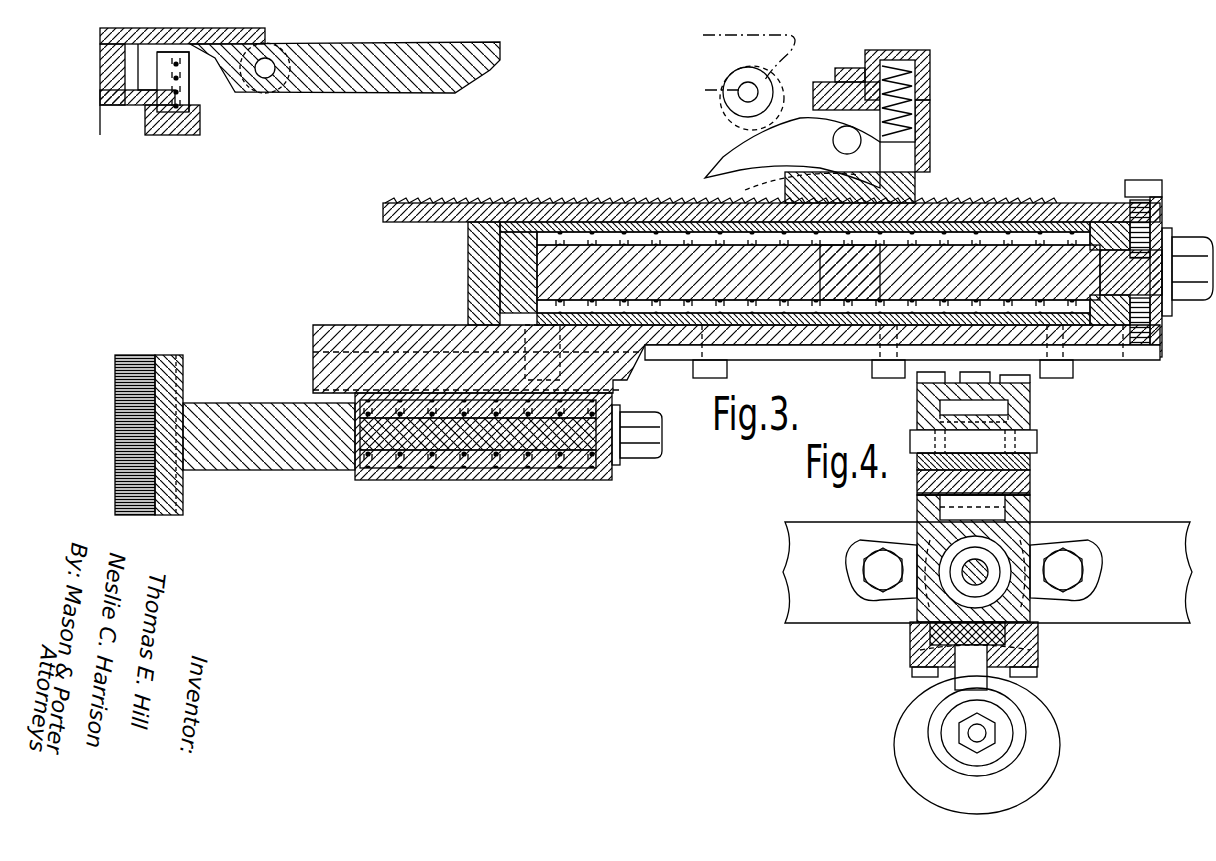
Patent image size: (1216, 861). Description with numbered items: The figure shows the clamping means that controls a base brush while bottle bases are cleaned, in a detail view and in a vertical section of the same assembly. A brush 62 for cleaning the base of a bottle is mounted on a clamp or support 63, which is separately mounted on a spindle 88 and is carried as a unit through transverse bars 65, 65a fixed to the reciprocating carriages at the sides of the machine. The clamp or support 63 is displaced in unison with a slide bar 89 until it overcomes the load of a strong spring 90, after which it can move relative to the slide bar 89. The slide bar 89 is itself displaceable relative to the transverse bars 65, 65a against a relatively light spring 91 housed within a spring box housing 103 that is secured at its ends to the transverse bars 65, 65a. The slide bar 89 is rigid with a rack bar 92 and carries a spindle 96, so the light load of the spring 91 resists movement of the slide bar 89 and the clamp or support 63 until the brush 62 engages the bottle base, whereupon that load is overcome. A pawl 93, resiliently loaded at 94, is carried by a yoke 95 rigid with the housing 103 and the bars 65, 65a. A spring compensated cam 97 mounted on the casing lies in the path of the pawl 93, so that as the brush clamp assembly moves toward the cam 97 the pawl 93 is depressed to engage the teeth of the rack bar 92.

In FIG. 3, the base brush 62 is at (125, 444).
In FIG. 3, the clamp or support 63 is at (183, 500).
In FIG. 4, the clamp or support 63 is at (1032, 758).
In FIG. 3, the transverse bar 65 is at (1102, 228).
In FIG. 3, the transverse bar 65a is at (488, 240).
In FIG. 3, the spindle 88 is at (272, 455).
In FIG. 4, the spindle 88 is at (997, 730).
In FIG. 3, the slide bar 89 is at (340, 364).
In FIG. 4, the slide bar 89 is at (945, 639).
In FIG. 3, the strong spring 90 is at (508, 465).
In FIG. 3, the light spring 91 is at (963, 248).
In FIG. 3, the rack bar 92 is at (588, 214).
In FIG. 4, the rack bar 92 is at (990, 500).
In FIG. 3, the pawl 93 is at (716, 152).
In FIG. 4, the pawl 93 is at (1000, 467).
In FIG. 3, the resilient loading 94 is at (916, 106).
In FIG. 3, the yoke 95 is at (900, 190).
In FIG. 3, the spindle 96 is at (853, 268).
In FIG. 4, the spindle 96 is at (985, 578).
In FIG. 3, the spring compensated cam 97 is at (340, 68).
In FIG. 3, the spring box housing 103 is at (1020, 222).